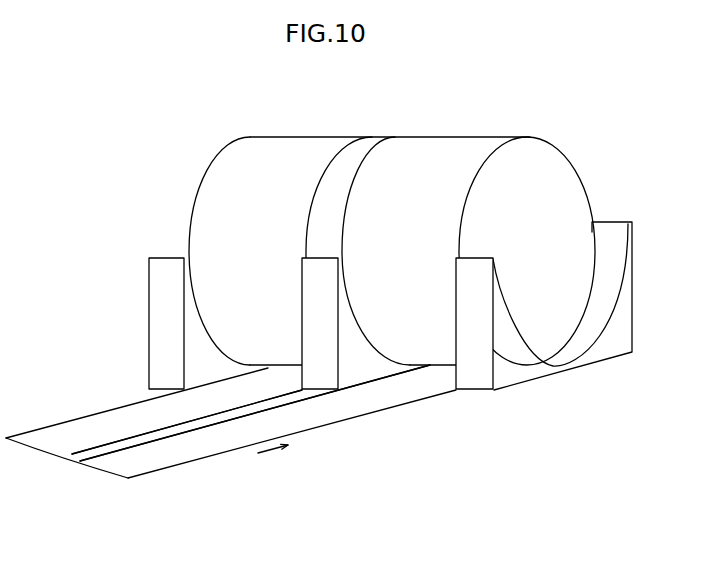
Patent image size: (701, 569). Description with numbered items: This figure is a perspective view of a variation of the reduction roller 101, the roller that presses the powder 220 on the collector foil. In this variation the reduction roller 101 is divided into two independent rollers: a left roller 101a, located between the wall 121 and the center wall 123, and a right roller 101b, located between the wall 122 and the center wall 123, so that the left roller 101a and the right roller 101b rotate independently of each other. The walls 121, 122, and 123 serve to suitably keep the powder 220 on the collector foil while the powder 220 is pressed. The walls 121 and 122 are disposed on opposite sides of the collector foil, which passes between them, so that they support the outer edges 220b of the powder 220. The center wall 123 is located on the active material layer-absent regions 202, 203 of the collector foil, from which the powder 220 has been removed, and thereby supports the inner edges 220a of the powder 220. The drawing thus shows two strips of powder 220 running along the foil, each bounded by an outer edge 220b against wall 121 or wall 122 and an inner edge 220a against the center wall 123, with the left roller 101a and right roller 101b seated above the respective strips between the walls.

The reduction roller 101 is at (366, 130).
The left roller 101a is at (293, 135).
The right roller 101b is at (450, 135).
The wall 121 is at (160, 300).
The wall 122 is at (473, 376).
The center wall 123 is at (358, 358).
The powder 220 is at (231, 441).
The inner edges of the powder 220a is at (88, 460).
The outer edges of the powder 220b is at (65, 422).
The active material layer-absent region 202 is at (163, 430).
The active material layer-absent region 203 is at (137, 420).